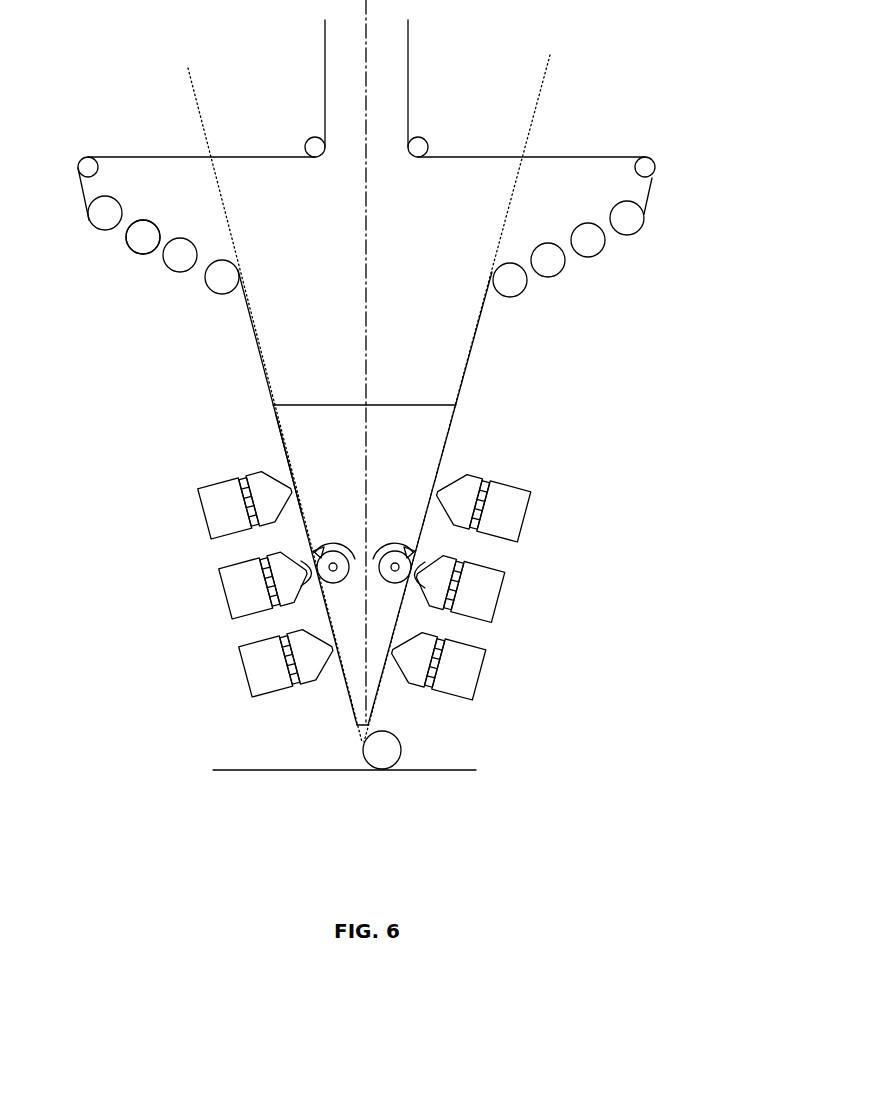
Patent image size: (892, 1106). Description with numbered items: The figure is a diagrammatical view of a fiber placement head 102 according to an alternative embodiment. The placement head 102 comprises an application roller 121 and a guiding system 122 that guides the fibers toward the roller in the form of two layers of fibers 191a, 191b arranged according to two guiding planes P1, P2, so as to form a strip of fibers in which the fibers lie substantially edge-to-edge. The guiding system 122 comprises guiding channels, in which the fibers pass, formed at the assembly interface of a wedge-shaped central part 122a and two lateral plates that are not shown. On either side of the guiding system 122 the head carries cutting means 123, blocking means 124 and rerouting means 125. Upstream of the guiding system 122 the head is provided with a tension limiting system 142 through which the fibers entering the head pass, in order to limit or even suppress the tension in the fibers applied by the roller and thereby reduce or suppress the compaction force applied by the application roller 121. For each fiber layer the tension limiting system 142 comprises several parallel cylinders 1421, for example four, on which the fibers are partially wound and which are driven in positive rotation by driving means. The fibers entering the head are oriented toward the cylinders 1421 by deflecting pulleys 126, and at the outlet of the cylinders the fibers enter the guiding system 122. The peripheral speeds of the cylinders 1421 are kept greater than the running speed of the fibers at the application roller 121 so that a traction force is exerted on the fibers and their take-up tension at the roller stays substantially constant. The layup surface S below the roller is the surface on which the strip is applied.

The deflecting pulleys 126 is at (84, 162).
The tension limiting system 142 is at (95, 225).
The cylinders 1421 is at (130, 242).
The layer of fibers 191a is at (325, 72).
The layer of fibers 191b is at (410, 72).
The guiding system 122 is at (408, 403).
The central part 122a is at (310, 403).
The placement head 102 is at (275, 447).
The blocking means 124 is at (532, 518).
The rerouting means 125 is at (513, 600).
The cutting means 123 is at (493, 678).
The application roller 121 is at (410, 749).
The sheet S is at (222, 769).
The guiding plane P1 is at (269, 392).
The guiding plane P2 is at (468, 388).